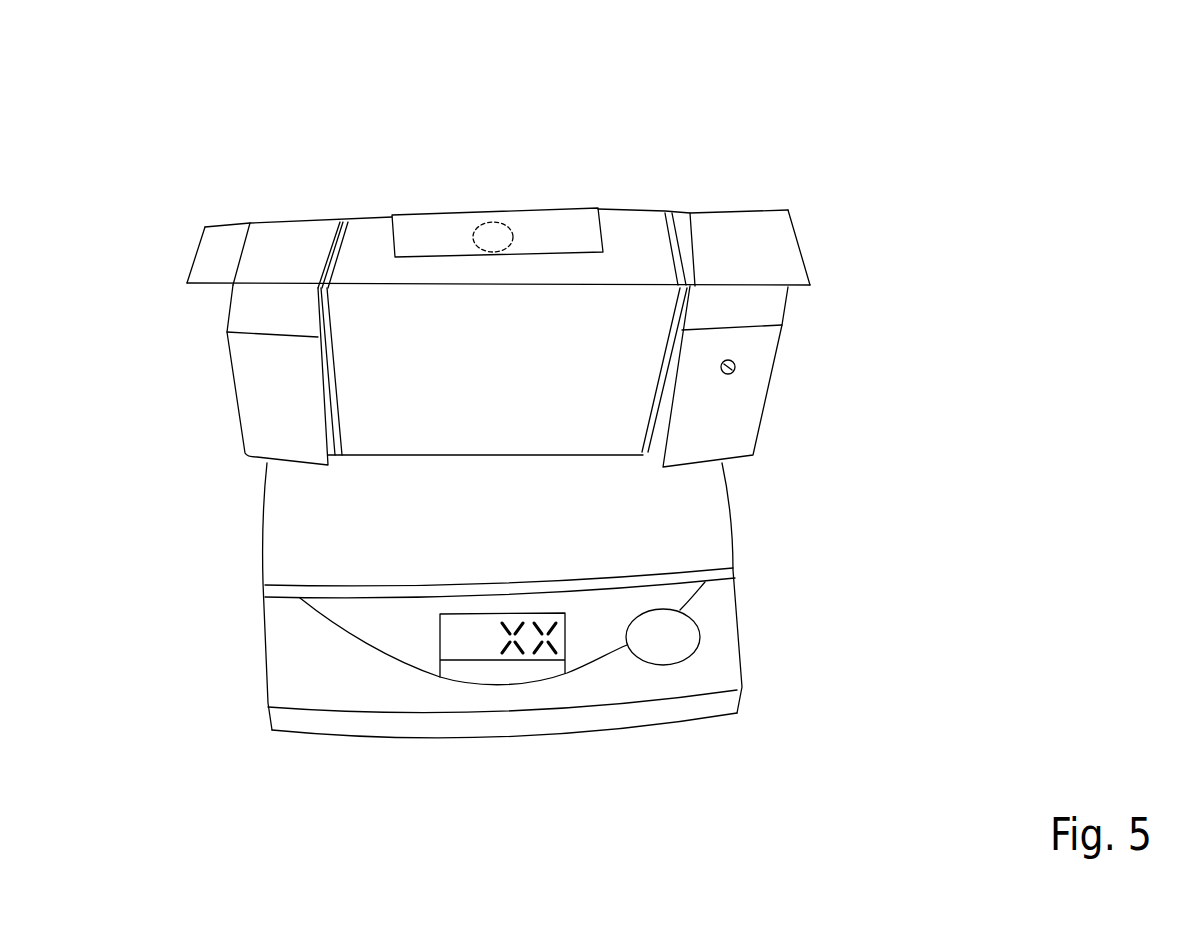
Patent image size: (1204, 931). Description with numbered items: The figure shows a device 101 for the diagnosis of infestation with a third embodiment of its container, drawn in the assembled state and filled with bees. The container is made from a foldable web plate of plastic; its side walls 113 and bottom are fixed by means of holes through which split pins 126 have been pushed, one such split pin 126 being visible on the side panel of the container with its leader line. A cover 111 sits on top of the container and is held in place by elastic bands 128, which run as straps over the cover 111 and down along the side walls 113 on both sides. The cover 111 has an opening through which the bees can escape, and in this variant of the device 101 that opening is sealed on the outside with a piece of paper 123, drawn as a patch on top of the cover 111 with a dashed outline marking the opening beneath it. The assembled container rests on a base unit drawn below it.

The packaged assembly 101 is at (463, 155).
The lid 111 is at (753, 269).
The box body 113 is at (515, 432).
The label 123 is at (492, 222).
The fastener 126 is at (737, 368).
The strap 128 is at (343, 222).